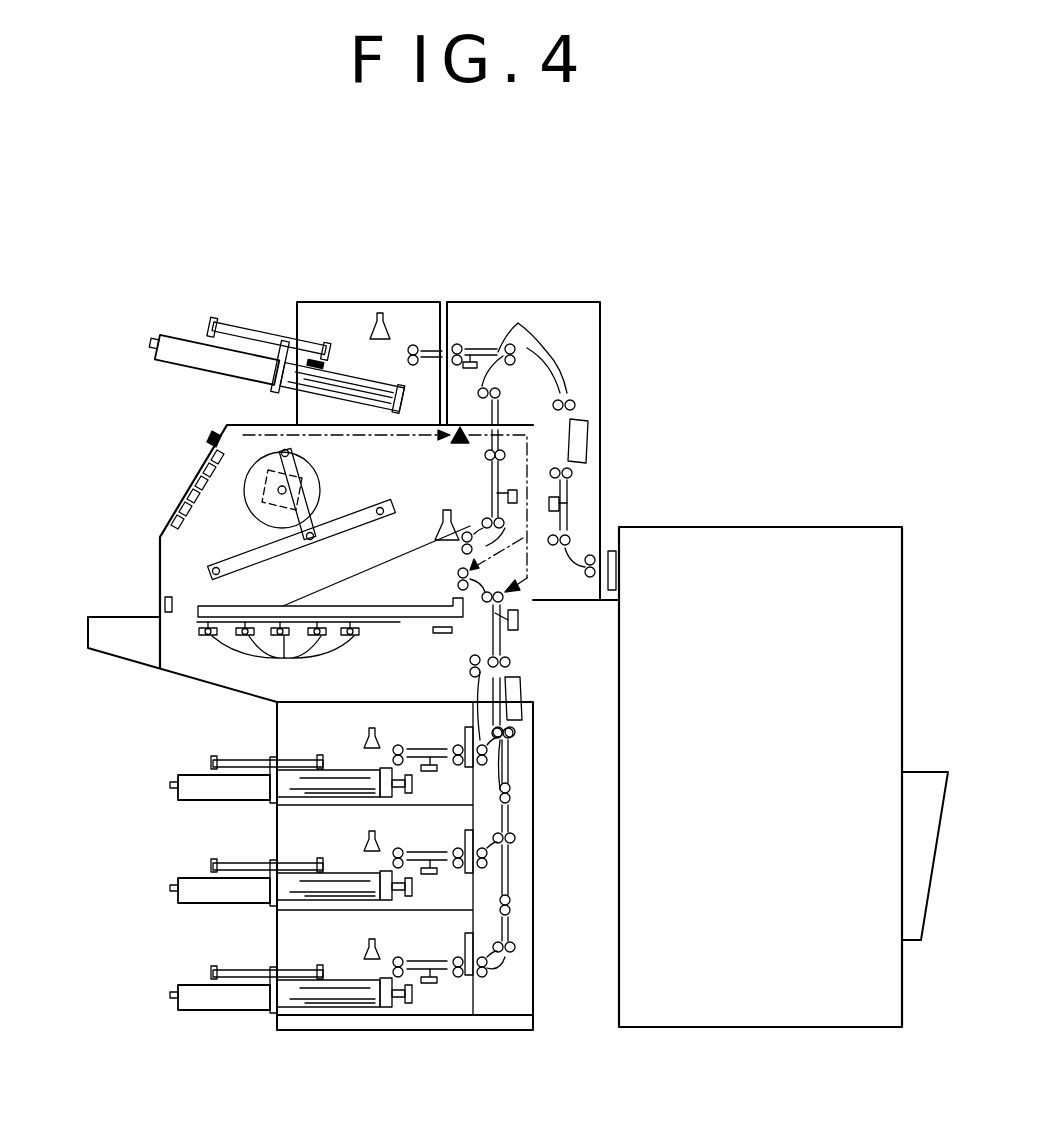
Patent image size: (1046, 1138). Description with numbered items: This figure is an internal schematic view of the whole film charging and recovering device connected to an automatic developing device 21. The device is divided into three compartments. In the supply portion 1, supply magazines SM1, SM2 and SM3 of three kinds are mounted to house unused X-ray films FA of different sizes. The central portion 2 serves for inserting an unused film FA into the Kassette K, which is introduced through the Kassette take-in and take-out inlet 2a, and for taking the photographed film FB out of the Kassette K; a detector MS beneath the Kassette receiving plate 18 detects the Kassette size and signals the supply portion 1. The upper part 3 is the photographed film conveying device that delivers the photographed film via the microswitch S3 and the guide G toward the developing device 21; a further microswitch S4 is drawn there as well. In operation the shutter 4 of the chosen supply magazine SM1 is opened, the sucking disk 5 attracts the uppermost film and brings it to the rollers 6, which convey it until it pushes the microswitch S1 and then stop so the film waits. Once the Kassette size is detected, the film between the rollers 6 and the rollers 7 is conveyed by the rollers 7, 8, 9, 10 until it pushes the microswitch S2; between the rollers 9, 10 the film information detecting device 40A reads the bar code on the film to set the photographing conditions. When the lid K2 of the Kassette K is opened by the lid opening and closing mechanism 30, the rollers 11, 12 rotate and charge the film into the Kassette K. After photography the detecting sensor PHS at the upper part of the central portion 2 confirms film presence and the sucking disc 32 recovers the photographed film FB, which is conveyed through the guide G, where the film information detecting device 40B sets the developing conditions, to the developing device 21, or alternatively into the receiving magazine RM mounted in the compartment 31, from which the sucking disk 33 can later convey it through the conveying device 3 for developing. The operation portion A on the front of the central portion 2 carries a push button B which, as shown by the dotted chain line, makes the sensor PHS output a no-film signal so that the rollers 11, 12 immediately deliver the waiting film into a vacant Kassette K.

The supply portion 1 is at (265, 832).
The central portion 2 is at (145, 540).
The Kassette take-in and take-out inlet 2a is at (164, 604).
The photographed film conveying device 3 is at (612, 340).
The shutter 4 is at (322, 755).
The sucking disk 5 is at (372, 725).
The rollers 6 is at (400, 745).
The rollers 7 is at (468, 726).
The rollers 8 is at (547, 767).
The rollers 9 is at (512, 734).
The rollers 10 is at (510, 662).
The driving rollers 11 is at (486, 605).
The driving rollers 12 is at (457, 578).
The Kassette receiving plate 18 is at (410, 620).
The automatic developing device 21 is at (832, 512).
The lid opening and closing mechanism 30 is at (327, 508).
The compartment 31 is at (366, 292).
The sucking disc 32 is at (450, 508).
The sucking disk 33 is at (370, 333).
The film information detecting device 40A is at (522, 698).
The film information detecting device 40B is at (588, 440).
The operation portion A is at (168, 475).
The push button B is at (207, 437).
The guide G is at (524, 346).
The Kassette K is at (200, 596).
The lid K2 is at (302, 573).
The photographed film FB is at (394, 560).
The detecting sensor PHS is at (452, 442).
The detector MS is at (279, 652).
The unused X-ray film FA is at (350, 982).
The microswitch S1 is at (437, 773).
The microswitch S2 is at (518, 620).
The microswitch S3 is at (513, 488).
The sensor S4 is at (467, 368).
The receive magazine RM is at (155, 340).
The supply magazine SM1 is at (170, 786).
The supply magazine SM2 is at (170, 889).
The supply magazine SM3 is at (170, 1000).